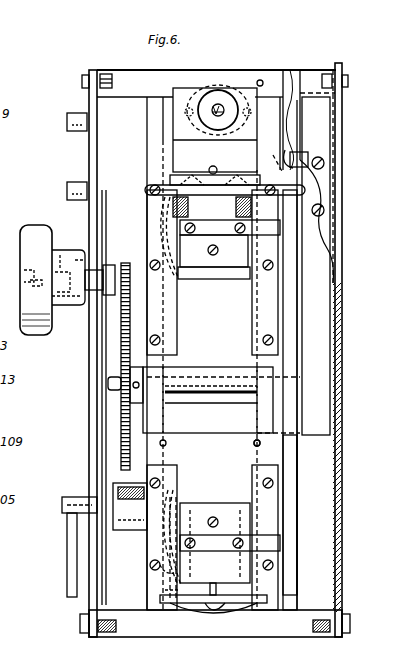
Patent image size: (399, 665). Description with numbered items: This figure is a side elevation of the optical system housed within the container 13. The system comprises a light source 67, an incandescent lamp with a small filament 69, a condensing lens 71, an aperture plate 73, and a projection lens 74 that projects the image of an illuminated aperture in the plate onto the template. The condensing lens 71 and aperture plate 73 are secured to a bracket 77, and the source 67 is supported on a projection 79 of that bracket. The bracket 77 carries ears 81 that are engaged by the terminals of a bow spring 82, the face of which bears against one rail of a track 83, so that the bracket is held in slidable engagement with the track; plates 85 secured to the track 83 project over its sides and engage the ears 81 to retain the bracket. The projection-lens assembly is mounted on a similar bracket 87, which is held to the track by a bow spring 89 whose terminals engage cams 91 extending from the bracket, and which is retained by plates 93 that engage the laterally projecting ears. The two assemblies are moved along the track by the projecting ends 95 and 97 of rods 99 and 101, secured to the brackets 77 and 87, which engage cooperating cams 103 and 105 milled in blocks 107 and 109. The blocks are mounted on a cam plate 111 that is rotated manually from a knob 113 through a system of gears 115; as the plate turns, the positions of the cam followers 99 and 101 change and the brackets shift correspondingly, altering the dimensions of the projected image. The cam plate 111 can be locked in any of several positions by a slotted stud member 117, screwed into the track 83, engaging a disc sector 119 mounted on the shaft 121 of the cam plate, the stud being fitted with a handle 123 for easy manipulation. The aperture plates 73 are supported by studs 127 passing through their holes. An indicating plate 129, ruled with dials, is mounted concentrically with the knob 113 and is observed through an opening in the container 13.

The container 13 is at (92, 366).
The light source 67 is at (205, 98).
The filament 69 is at (220, 107).
The condensing lens 71 is at (230, 183).
The aperture plate 73 is at (150, 191).
The projection lens 74 is at (214, 612).
The bracket 77 is at (306, 163).
The projection 79 is at (186, 139).
The ears 81 is at (286, 136).
The bow spring 82 is at (165, 245).
The track 83 is at (147, 112).
The plates 85 is at (252, 301).
The bracket 87 is at (214, 510).
The bow spring 89 is at (162, 572).
The cams 91 is at (177, 483).
The plates 93 is at (150, 468).
The projecting end 95 is at (300, 220).
The projecting end 97 is at (284, 542).
The rod 99 is at (212, 236).
The rod 101 is at (276, 543).
The cam 103 is at (290, 340).
The cam 105 is at (270, 437).
The block 107 is at (291, 304).
The block 109 is at (290, 465).
The cam plate 111 is at (298, 590).
The knob 113 is at (43, 335).
The gears 115 is at (121, 316).
The slotted stud member 117 is at (65, 500).
The disc sector 119 is at (120, 480).
The shaft 121 is at (210, 378).
The handle 123 is at (67, 533).
The studs 127 is at (74, 113).
The plate 129 is at (110, 342).